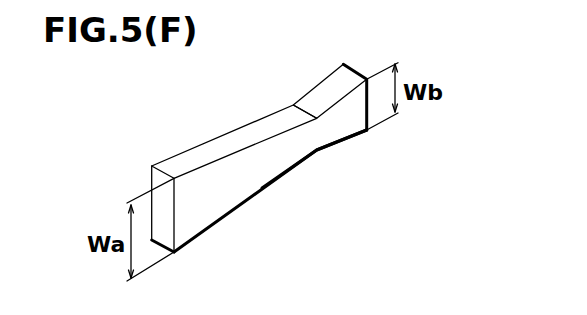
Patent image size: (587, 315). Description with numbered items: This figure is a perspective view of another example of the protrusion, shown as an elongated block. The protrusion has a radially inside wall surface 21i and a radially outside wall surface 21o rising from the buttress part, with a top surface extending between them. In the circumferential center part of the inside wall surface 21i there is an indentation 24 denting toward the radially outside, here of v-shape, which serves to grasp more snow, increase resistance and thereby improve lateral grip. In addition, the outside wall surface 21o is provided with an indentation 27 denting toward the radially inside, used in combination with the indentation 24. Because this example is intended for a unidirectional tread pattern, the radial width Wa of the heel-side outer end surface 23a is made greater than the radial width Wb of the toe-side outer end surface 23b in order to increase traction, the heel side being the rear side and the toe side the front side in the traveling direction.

The radially outside wall surface 21o is at (195, 160).
The radially inside wall surface 21i is at (220, 220).
The heel-side outer end surface 23a is at (160, 182).
The toe-side outer end surface 23b is at (368, 100).
The indentation 24 is at (272, 185).
The indentation 27 is at (262, 132).